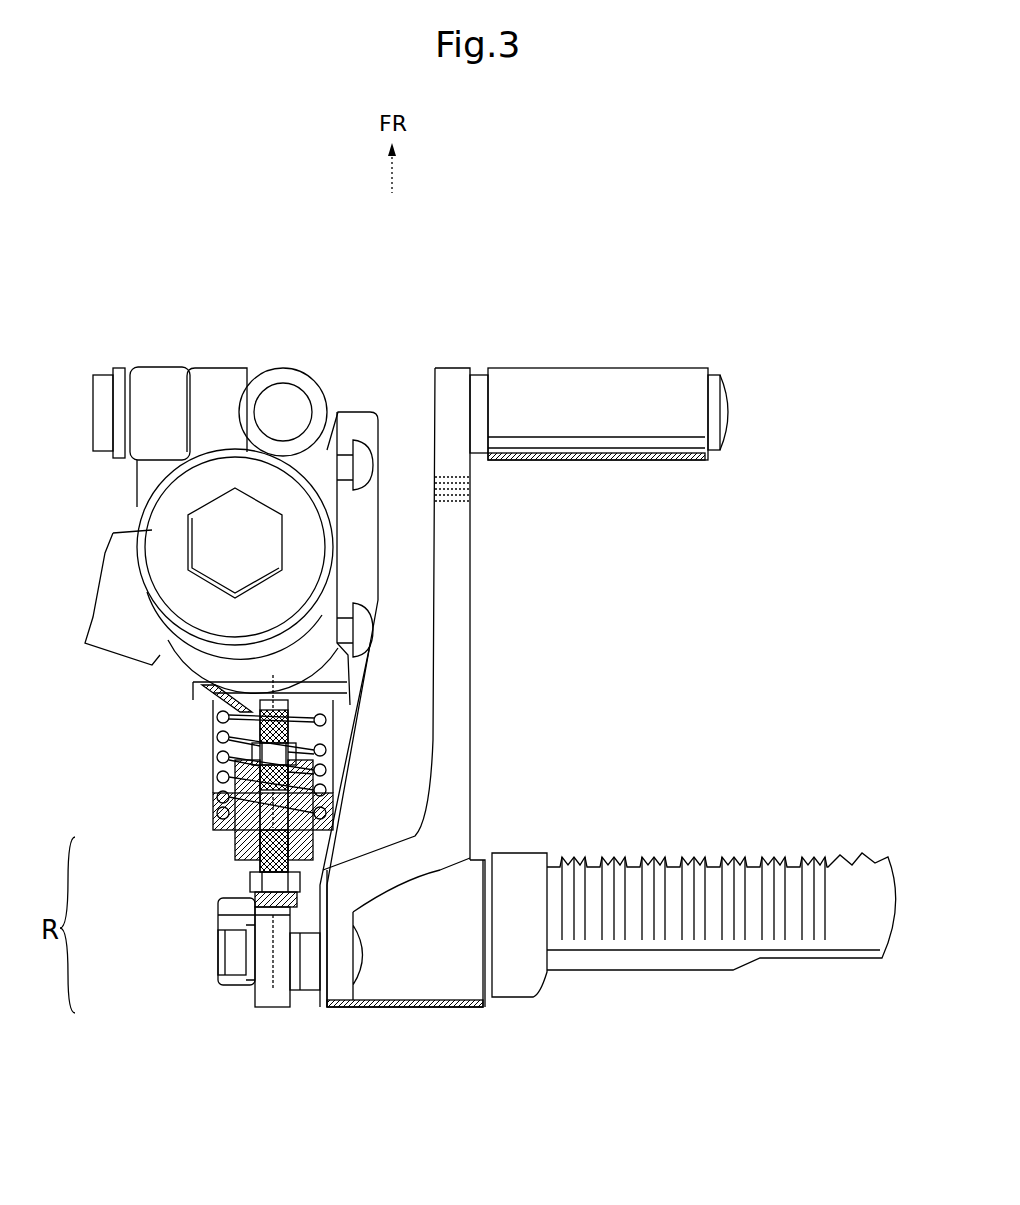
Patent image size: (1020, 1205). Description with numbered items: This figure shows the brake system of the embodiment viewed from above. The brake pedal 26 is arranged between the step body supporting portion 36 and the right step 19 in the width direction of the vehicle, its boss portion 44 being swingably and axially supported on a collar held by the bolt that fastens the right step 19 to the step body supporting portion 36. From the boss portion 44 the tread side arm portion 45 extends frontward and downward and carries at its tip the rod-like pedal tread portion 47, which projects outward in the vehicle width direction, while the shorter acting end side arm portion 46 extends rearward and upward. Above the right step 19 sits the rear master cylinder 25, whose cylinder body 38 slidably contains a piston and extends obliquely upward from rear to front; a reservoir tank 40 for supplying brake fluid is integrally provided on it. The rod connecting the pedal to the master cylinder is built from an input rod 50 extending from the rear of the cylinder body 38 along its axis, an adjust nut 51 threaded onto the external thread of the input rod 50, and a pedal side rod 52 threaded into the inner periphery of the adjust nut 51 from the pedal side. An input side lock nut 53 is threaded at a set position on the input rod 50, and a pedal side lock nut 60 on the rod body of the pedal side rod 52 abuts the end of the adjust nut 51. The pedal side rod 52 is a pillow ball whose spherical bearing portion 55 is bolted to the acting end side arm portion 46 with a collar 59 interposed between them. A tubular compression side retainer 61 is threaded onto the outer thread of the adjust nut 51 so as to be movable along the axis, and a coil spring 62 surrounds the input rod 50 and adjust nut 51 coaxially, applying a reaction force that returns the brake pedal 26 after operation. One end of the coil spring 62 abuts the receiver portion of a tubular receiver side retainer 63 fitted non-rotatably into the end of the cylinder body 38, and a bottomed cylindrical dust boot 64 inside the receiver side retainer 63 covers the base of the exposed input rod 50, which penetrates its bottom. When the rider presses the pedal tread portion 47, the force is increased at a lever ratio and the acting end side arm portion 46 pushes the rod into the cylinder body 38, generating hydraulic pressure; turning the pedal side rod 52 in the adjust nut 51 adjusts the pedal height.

The right step 19 is at (753, 857).
The rear master cylinder 25 is at (287, 360).
The brake pedal 26 is at (478, 632).
The step body supporting portion 36 is at (300, 988).
The cylinder body 38 is at (327, 448).
The reservoir tank 40 is at (190, 665).
The boss portion 44 is at (455, 995).
The tread side arm portion 45 is at (463, 568).
The acting end side arm portion 46 is at (340, 997).
The pedal tread portion 47 is at (627, 380).
The input rod 50 is at (220, 760).
The adjust nut 51 is at (257, 862).
The pedal side rod 52 is at (240, 910).
The input side lock nut 53 is at (213, 813).
The spherical bearing portion 55 is at (272, 1005).
The collar 59 is at (312, 975).
The pedal side lock nut 60 is at (300, 883).
The compression side retainer 61 is at (242, 860).
The coil spring 62 is at (333, 773).
The receiver side retainer 63 is at (205, 688).
The dust boot 64 is at (297, 698).